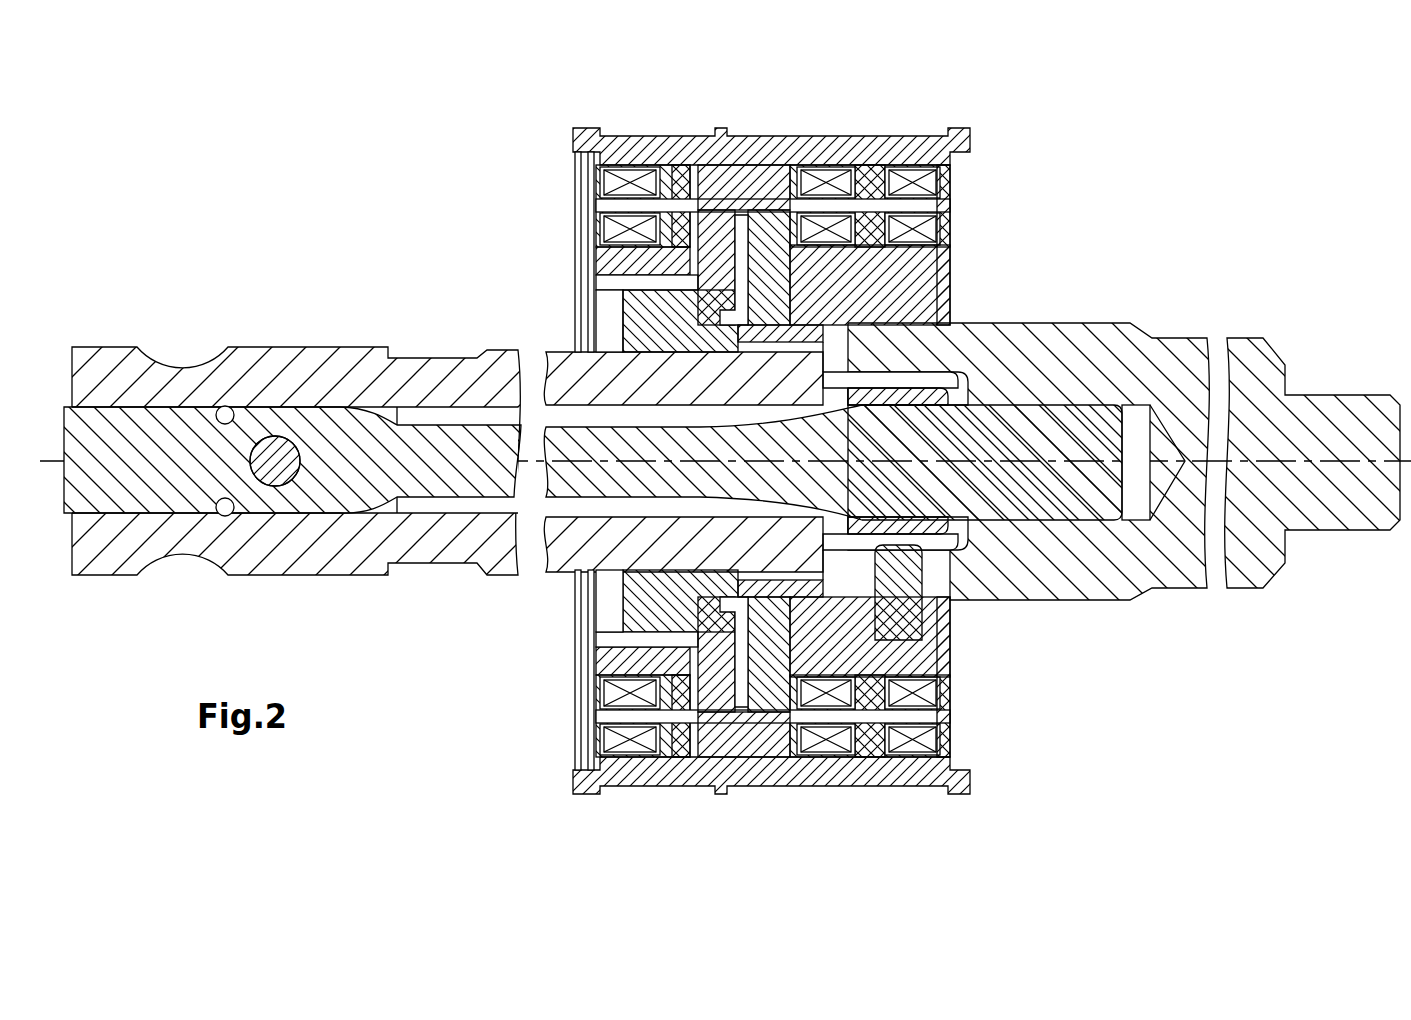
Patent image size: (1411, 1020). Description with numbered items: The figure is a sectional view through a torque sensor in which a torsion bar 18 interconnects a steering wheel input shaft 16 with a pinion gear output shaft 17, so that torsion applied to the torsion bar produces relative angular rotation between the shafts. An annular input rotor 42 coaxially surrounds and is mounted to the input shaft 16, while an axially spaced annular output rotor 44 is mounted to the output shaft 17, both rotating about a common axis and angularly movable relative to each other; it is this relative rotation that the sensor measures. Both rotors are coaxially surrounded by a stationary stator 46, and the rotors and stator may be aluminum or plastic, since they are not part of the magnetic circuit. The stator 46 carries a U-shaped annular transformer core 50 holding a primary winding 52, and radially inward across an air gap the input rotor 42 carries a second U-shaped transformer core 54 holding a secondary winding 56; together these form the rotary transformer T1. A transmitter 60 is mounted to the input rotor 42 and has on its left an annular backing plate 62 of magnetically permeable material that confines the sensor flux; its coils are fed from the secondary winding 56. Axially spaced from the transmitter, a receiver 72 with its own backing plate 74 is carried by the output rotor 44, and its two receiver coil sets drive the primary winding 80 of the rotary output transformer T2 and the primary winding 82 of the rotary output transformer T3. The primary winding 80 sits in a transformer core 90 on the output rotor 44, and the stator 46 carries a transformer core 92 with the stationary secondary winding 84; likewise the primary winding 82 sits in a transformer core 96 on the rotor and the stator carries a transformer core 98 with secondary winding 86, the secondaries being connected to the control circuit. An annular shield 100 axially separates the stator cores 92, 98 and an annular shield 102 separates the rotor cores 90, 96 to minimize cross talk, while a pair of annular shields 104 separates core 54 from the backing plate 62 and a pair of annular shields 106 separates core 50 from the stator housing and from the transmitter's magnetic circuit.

The steering wheel input shaft 16 is at (258, 372).
The pinion gear output shaft 17 is at (1075, 322).
The torsion bar 18 is at (440, 445).
The input rotor 42 is at (610, 257).
The output rotor 44 is at (945, 275).
The stator 46 is at (893, 148).
The transformer core 50 is at (612, 165).
The primary winding 52 is at (633, 165).
The transformer core 54 is at (595, 690).
The secondary winding 56 is at (600, 715).
The transmitter 60 is at (742, 215).
The backing plate 62 is at (712, 215).
The receiver 72 is at (758, 215).
The backing plate 74 is at (765, 140).
The primary winding 80 is at (955, 250).
The primary winding 82 is at (955, 225).
The secondary winding 84 is at (800, 778).
The secondary winding 86 is at (930, 790).
The transformer core 90 is at (945, 297).
The transformer core 92 is at (745, 790).
The transformer core 96 is at (955, 213).
The transformer core 98 is at (885, 790).
The annular shield 100 is at (865, 778).
The annular shield 102 is at (925, 655).
The annular shields 104 is at (622, 625).
The annular shields 106 is at (665, 778).
The rotary transformer T1 is at (552, 226).
The rotary output transformer T2 is at (838, 146).
The rotary output transformer T3 is at (924, 148).